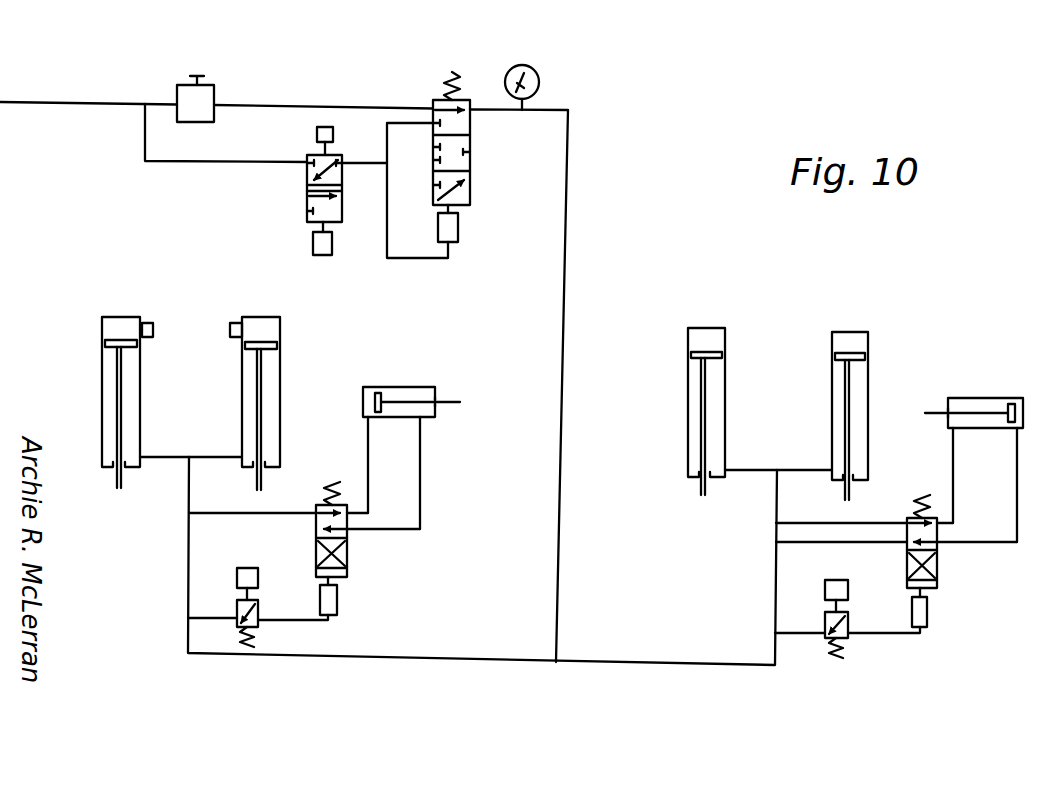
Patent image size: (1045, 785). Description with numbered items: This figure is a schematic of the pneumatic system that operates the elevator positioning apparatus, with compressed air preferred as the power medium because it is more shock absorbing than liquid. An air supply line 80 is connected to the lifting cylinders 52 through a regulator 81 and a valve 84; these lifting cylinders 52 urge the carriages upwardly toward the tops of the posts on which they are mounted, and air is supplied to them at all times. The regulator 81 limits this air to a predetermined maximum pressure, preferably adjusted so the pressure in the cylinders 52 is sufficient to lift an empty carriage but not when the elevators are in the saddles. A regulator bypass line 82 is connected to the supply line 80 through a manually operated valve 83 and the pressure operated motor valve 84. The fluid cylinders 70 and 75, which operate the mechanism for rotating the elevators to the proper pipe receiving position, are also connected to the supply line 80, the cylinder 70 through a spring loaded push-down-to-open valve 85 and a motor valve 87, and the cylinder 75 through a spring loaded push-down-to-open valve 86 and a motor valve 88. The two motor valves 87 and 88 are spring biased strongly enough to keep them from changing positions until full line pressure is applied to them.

The air supply line 80 is at (63, 102).
The regulator 81 is at (178, 92).
The regulator bypass line 82 is at (200, 162).
The manually operated valve 83 is at (297, 200).
The pressure operated motor valve 84 is at (474, 190).
The lifting cylinders 52 is at (242, 389).
The fluid cylinder 75 is at (433, 387).
The fluid cylinder 70 is at (985, 398).
The spring loaded push-down-to-open valve 86 is at (262, 598).
The motor valve 88 is at (353, 568).
The spring loaded push-down-to-open valve 85 is at (819, 592).
The motor valve 87 is at (942, 587).